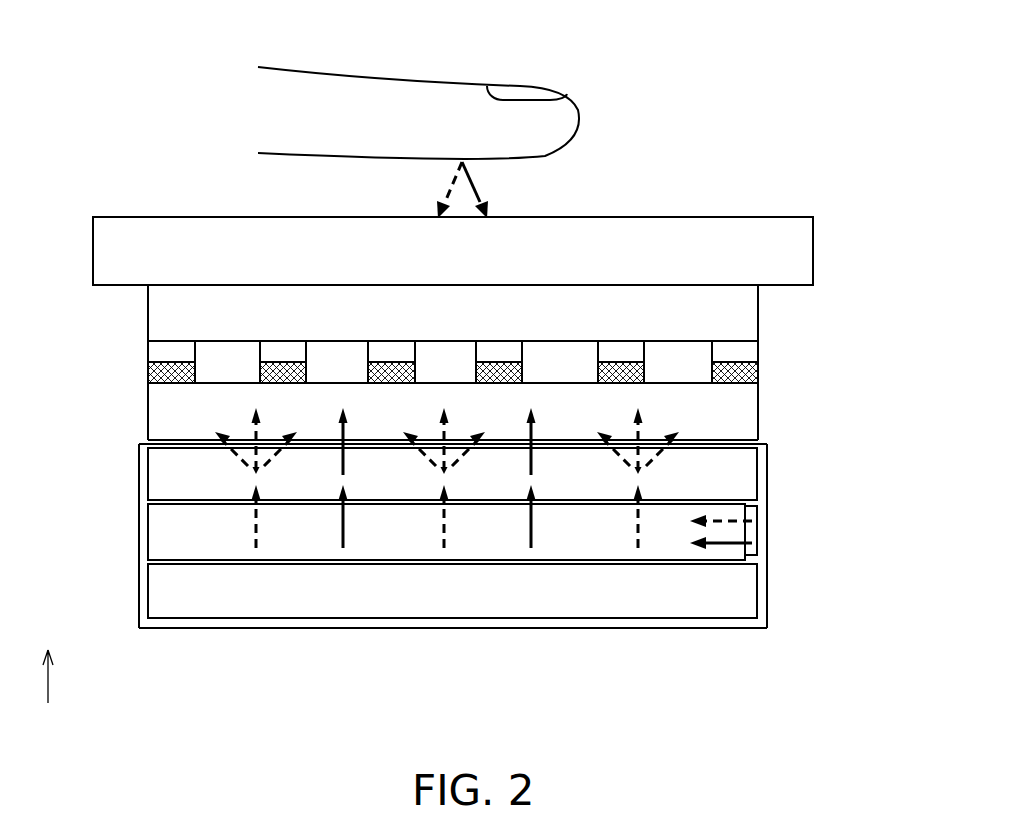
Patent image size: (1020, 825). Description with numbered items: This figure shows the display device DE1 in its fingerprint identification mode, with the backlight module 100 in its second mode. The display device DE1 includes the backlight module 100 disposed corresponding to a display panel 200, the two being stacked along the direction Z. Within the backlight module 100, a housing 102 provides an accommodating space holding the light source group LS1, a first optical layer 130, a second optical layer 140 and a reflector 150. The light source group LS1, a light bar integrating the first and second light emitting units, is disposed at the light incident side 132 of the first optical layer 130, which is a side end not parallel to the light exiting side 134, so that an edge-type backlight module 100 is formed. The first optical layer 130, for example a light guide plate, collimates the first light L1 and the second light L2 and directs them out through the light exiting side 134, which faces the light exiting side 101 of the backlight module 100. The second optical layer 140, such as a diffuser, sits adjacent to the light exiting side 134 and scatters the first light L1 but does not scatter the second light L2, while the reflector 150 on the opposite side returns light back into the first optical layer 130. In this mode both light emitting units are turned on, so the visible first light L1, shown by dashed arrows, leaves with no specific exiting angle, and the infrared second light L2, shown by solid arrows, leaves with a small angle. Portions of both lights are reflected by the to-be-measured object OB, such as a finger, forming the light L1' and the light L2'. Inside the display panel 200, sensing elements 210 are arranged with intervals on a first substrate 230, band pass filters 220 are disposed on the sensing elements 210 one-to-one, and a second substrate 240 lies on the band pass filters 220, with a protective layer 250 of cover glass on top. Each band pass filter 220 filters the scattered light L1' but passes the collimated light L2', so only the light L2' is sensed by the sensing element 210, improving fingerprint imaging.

The to-be-measured object OB is at (550, 71).
The display device DE1 is at (808, 190).
The light L1' is at (420, 190).
The light L2' is at (505, 190).
The protective layer 250 is at (803, 248).
The display panel 200 is at (867, 287).
The second substrate 240 is at (750, 318).
The band pass filter 220 is at (745, 350).
The sensing element 210 is at (757, 372).
The first substrate 230 is at (747, 402).
The light exiting side of the backlight module 101 is at (727, 443).
The housing 102 is at (157, 625).
The backlight module 100 is at (75, 468).
The second optical layer 140 is at (157, 473).
The first optical layer 130 is at (157, 528).
The reflector 150 is at (157, 585).
The light source group LS1 is at (758, 518).
The light exiting side 134 is at (726, 503).
The light incident side 132 is at (753, 548).
The first light L1 is at (393, 474).
The second light L2 is at (415, 541).
The direction Z is at (46, 663).